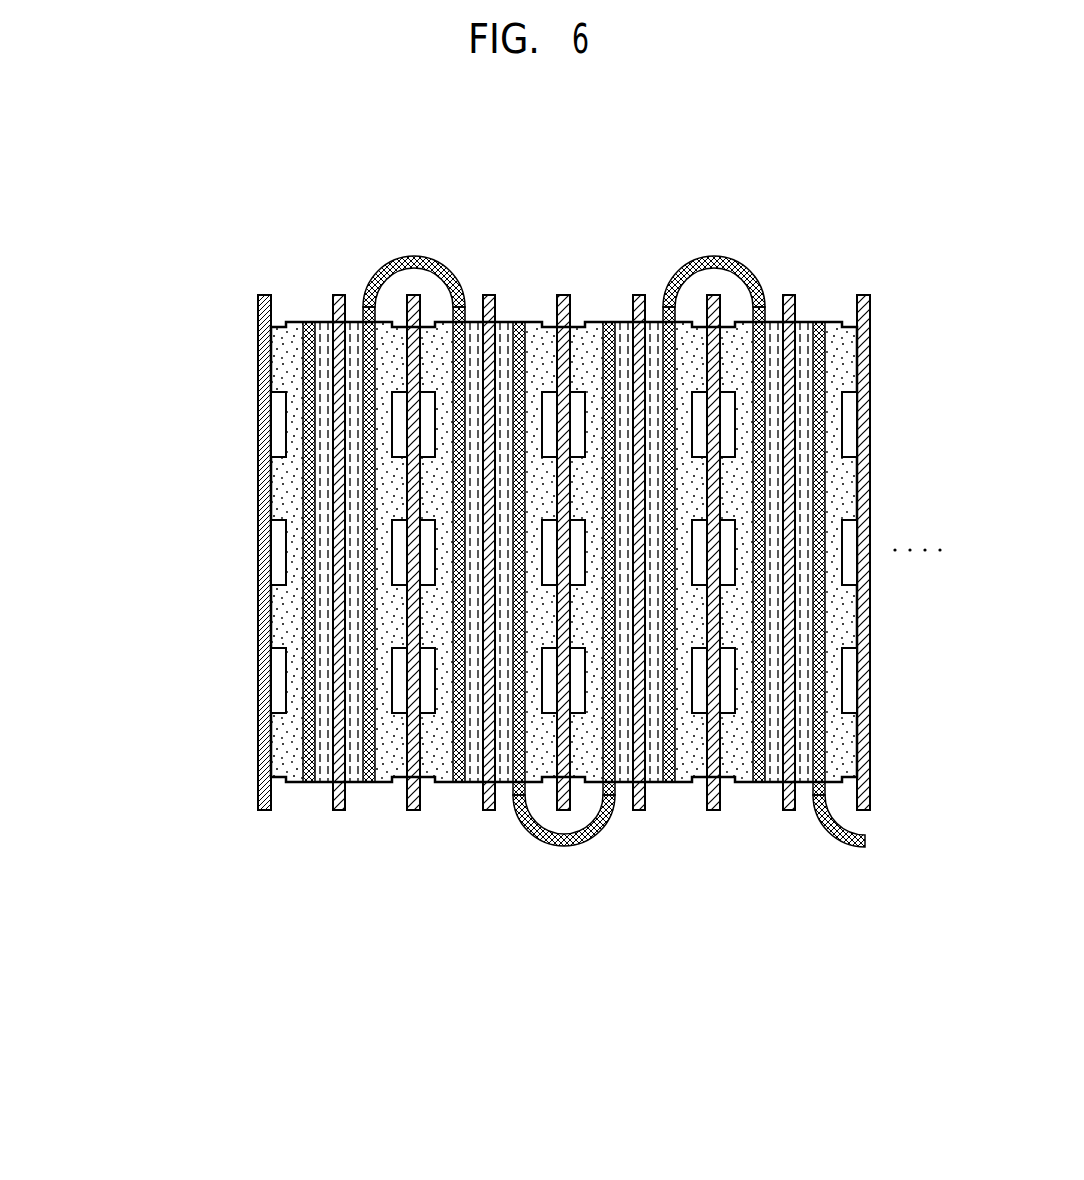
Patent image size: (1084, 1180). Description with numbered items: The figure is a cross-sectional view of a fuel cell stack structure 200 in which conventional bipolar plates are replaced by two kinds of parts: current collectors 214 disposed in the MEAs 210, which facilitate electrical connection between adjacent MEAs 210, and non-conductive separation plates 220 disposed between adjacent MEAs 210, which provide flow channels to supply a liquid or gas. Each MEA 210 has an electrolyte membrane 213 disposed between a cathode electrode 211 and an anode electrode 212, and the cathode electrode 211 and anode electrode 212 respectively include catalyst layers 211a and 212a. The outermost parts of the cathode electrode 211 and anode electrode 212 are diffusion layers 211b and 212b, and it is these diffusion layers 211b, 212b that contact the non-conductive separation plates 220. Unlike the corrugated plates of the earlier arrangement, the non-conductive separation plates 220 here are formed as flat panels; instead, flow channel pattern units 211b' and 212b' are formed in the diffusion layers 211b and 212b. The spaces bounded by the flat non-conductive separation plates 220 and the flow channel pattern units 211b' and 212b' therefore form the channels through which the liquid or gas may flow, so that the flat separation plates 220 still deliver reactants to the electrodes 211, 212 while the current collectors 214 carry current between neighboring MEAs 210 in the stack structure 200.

The fuel cell stack structure 200 is at (242, 217).
The MEA 210 is at (349, 902).
The cathode electrode 211 is at (343, 882).
The catalyst layer 211a is at (325, 781).
The diffusion layer 211b is at (267, 603).
The flow channel pattern unit 211b' is at (193, 552).
The anode electrode 212 is at (470, 865).
The catalyst layer 212a is at (353, 781).
The diffusion layer 212b is at (421, 600).
The flow channel pattern unit 212b' is at (472, 542).
The electrolyte membrane 213 is at (340, 294).
The current collector 214 is at (310, 321).
The non-conductive separation plate 220 is at (258, 315).